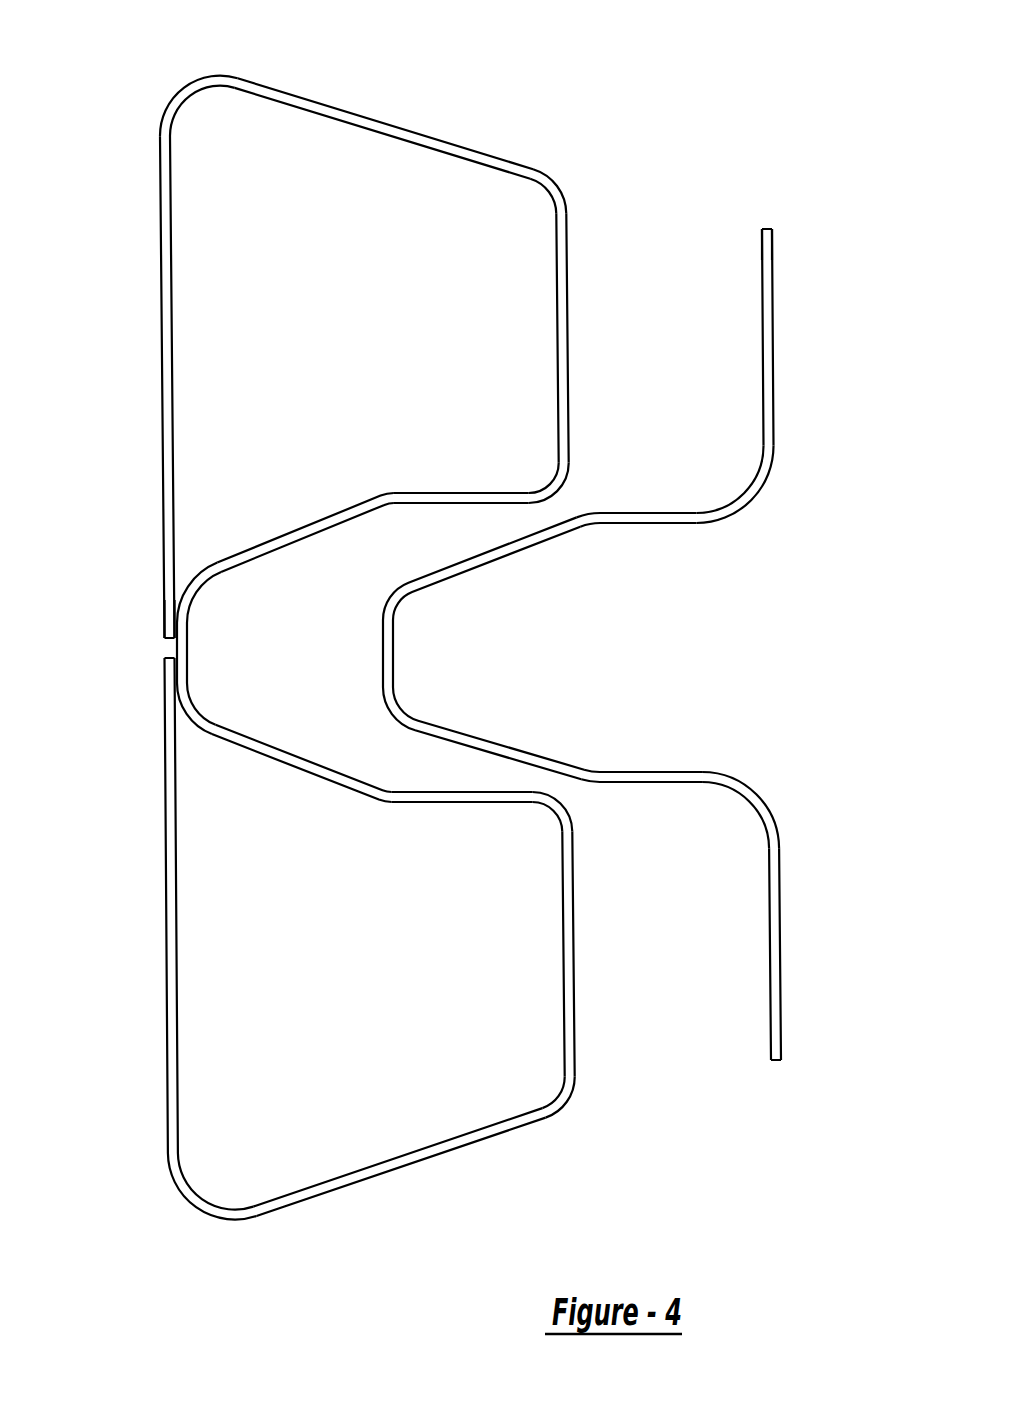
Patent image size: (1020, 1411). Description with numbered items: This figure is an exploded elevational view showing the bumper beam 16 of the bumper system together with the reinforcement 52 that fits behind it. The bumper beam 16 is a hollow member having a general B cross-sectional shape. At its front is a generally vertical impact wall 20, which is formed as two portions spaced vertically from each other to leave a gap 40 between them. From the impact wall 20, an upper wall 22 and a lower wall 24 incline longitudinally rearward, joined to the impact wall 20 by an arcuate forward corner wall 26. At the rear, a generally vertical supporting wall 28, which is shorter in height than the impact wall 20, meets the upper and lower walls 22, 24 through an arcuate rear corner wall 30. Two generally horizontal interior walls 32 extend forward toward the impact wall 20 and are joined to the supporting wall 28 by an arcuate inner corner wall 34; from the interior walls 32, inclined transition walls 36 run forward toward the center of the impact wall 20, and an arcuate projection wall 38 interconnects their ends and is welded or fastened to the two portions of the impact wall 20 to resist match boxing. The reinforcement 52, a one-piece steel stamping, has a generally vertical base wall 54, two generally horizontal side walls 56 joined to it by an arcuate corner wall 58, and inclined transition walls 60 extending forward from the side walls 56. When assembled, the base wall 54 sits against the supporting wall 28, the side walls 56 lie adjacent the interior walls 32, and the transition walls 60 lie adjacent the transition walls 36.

The bumper beam 16 is at (446, 141).
The impact wall 20 is at (168, 368).
The upper wall 22 is at (382, 124).
The lower wall 24 is at (392, 1172).
The forward corner wall 26 is at (192, 92).
The supporting wall 28 is at (566, 961).
The rear corner wall 30 is at (548, 186).
The interior wall 32 is at (451, 494).
The inner corner wall 34 is at (555, 488).
The transition wall 36 is at (294, 533).
The projection wall 38 is at (175, 615).
The gap 40 is at (170, 660).
The reinforcement 52 is at (771, 228).
The base wall 54 is at (772, 331).
The side wall 56 is at (637, 520).
The corner wall 58 is at (757, 494).
The transition wall 60 is at (493, 553).